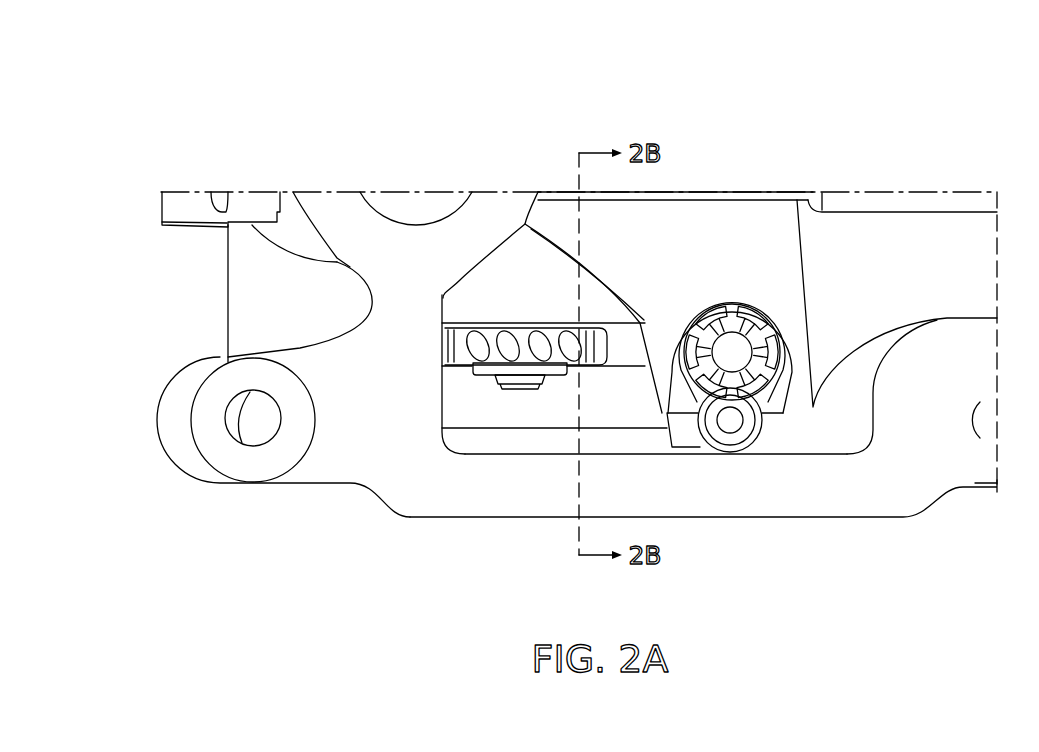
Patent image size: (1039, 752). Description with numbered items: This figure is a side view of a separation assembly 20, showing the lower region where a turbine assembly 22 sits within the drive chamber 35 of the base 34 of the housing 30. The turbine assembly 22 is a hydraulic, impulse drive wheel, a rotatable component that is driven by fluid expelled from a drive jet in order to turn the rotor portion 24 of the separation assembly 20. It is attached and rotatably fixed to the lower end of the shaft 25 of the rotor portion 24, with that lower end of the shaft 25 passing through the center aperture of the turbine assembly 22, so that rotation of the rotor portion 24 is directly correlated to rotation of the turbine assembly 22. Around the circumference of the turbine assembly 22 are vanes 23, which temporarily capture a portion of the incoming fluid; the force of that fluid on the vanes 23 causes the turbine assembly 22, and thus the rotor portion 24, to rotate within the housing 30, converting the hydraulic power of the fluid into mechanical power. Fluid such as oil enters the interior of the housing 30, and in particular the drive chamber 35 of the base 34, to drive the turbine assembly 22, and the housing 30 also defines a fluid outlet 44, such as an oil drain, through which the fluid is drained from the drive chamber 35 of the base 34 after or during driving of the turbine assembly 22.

The separation assembly 20 is at (902, 137).
The turbine assembly 22 is at (618, 343).
The vane 23 is at (519, 335).
The rotor portion 24 is at (530, 390).
The shaft 25 is at (520, 390).
The housing 30 is at (856, 526).
The base 34 is at (227, 290).
The drive chamber 35 is at (462, 415).
The fluid outlet 44 is at (560, 456).